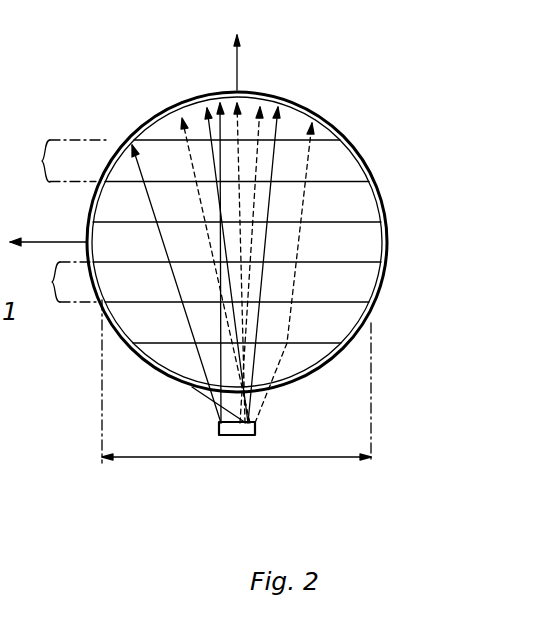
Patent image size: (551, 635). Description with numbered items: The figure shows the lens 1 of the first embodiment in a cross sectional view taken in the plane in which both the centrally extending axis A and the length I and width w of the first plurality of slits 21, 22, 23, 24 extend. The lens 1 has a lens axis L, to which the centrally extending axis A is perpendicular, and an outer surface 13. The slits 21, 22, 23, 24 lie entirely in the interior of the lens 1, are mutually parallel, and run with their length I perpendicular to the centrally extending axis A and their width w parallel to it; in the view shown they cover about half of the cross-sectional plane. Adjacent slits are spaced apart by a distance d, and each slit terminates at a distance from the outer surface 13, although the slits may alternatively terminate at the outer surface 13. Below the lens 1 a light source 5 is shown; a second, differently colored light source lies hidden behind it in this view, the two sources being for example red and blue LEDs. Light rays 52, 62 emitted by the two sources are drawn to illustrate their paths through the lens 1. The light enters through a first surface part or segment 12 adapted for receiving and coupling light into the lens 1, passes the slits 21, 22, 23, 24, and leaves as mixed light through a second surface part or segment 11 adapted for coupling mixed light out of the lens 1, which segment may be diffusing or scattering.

The lens 1 is at (367, 115).
The light source 5 is at (255, 430).
The second surface part or segment 11 is at (176, 98).
The first surface part or segment 12 is at (192, 387).
The outer surface 13 is at (362, 322).
The slit of the first plurality of slits 21 is at (297, 116).
The slit of the first plurality of slits 22 is at (362, 200).
The slit of the first plurality of slits 23 is at (357, 282).
The slit of the first plurality of slits 24 is at (305, 352).
The light ray 52 is at (172, 278).
The light ray 62 is at (300, 237).
The centrally extending axis A is at (237, 63).
The lens axis L is at (46, 242).
The distance d is at (65, 161).
The width w is at (61, 282).
The length I is at (225, 458).